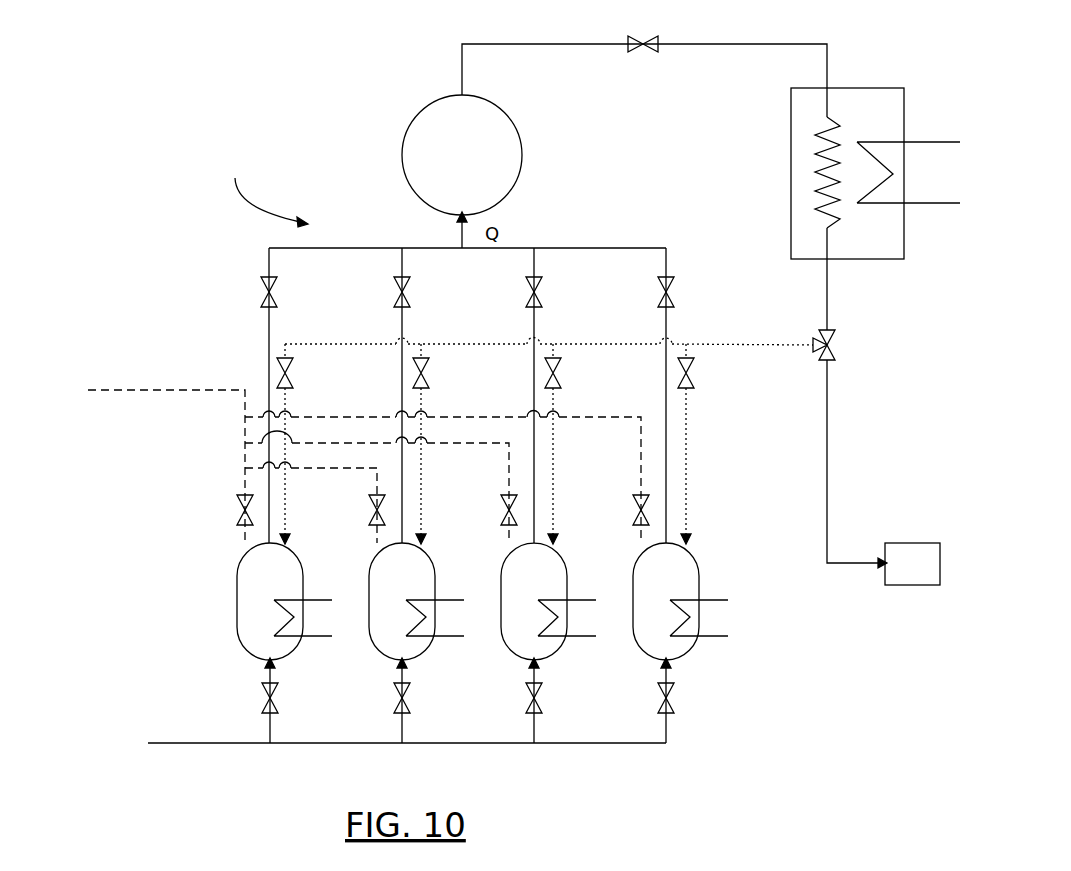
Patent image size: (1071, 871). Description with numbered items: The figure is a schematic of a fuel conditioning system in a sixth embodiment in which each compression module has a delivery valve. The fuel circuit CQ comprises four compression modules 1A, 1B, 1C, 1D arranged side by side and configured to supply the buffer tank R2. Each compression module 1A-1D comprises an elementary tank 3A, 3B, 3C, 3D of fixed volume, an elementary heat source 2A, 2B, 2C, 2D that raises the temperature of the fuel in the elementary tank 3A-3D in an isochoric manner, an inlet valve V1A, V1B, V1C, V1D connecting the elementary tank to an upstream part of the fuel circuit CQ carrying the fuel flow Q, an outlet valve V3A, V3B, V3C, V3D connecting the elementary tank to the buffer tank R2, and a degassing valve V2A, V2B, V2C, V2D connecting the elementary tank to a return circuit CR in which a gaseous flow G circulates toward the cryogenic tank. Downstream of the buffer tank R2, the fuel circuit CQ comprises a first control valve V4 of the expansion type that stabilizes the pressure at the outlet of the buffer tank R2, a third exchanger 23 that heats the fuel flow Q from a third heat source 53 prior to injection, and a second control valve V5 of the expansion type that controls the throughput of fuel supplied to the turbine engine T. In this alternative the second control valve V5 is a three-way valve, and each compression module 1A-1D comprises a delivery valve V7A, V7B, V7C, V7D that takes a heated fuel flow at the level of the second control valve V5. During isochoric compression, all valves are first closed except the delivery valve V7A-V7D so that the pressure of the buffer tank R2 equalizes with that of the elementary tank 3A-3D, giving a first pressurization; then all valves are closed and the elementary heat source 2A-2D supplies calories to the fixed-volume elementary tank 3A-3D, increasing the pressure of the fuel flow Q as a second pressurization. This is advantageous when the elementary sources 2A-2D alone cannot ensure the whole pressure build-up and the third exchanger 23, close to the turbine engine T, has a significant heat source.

The third exchanger 23 is at (848, 88).
The third heat source 53 is at (908, 172).
The compression module 1A is at (270, 605).
The compression module 1B is at (402, 605).
The compression module 1C is at (534, 605).
The compression module 1D is at (666, 605).
The elementary heat source 2A is at (308, 618).
The elementary heat source 2B is at (440, 618).
The elementary heat source 2C is at (572, 618).
The elementary heat source 2D is at (704, 618).
The elementary tank 3A is at (237, 598).
The elementary tank 3B is at (369, 598).
The elementary tank 3C is at (501, 598).
The elementary tank 3D is at (633, 598).
The inlet valve V1A is at (291, 698).
The inlet valve V1B is at (423, 698).
The inlet valve V1C is at (555, 698).
The inlet valve V1D is at (688, 698).
The degassing valve V2A is at (224, 510).
The degassing valve V2B is at (356, 510).
The degassing valve V2C is at (488, 510).
The degassing valve V2D is at (620, 510).
The outlet valve V3A is at (289, 292).
The outlet valve V3B is at (422, 292).
The outlet valve V3C is at (554, 292).
The outlet valve V3D is at (687, 292).
The delivery valve V7A is at (304, 444).
The delivery valve V7B is at (440, 444).
The delivery valve V7C is at (572, 444).
The delivery valve V7D is at (706, 444).
The first control valve V4 is at (643, 66).
The second control valve V5 is at (841, 345).
The buffer tank R2 is at (462, 155).
The turbine engine T is at (584, 365).
The fuel flow Q is at (482, 583).
The fuel circuit CQ is at (828, 520).
The return circuit CR is at (142, 462).
The gaseous flow G is at (209, 371).